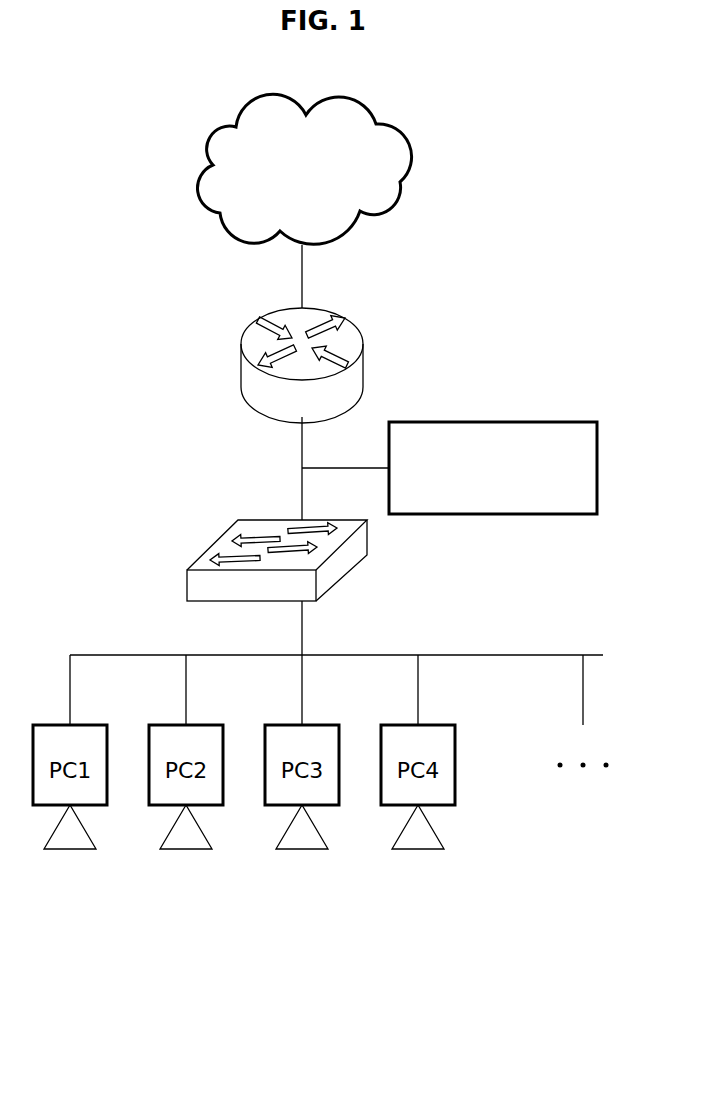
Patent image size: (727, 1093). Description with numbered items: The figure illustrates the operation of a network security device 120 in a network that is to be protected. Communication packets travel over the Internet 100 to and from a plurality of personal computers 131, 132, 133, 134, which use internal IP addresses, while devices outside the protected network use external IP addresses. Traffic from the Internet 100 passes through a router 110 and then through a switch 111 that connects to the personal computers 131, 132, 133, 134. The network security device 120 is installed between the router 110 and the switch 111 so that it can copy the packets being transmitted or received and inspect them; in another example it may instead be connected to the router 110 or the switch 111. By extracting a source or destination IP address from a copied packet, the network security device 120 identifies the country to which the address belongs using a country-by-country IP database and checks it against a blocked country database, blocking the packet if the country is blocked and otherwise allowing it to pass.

The Internet 100 is at (378, 123).
The router 110 is at (241, 352).
The switch 111 is at (187, 582).
The network security device 120 is at (492, 422).
The personal computer 131 is at (72, 850).
The personal computer 132 is at (188, 850).
The personal computer 133 is at (304, 850).
The personal computer 134 is at (420, 850).